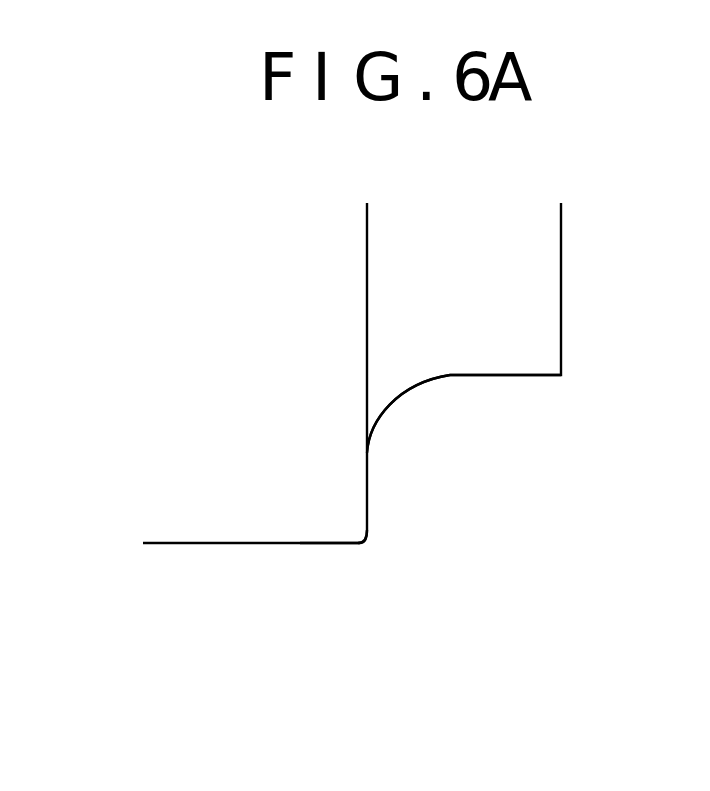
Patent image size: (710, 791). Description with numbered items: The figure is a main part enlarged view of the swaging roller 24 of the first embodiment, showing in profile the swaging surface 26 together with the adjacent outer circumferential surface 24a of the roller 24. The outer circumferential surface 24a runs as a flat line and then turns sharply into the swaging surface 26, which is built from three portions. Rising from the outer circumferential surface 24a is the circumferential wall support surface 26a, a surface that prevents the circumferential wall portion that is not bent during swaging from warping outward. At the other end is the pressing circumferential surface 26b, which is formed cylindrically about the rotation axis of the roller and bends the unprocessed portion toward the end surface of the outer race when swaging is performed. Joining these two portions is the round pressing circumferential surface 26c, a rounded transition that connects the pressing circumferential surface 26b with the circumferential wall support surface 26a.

The roller 24 is at (235, 518).
The outer circumferential surface 24a is at (310, 543).
The swaging surface 26 is at (545, 285).
The circumferential wall support surface 26a is at (368, 518).
The pressing circumferential surface 26b is at (522, 375).
The round pressing circumferential surface 26c is at (408, 393).